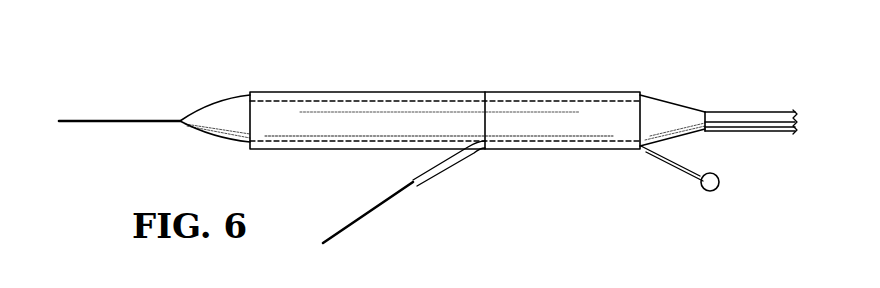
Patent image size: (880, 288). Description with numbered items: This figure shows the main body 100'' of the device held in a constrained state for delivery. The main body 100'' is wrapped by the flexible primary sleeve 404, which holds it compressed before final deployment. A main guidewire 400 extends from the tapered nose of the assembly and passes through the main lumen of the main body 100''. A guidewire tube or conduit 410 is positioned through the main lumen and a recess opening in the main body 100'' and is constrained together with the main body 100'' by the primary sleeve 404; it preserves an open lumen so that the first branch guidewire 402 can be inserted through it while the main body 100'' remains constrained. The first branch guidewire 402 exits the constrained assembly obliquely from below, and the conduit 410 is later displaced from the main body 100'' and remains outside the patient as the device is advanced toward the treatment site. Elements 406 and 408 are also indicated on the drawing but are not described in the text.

The shaft 400 is at (118, 120).
The device 100'' is at (238, 89).
The cable 402 is at (362, 212).
The housing 404 is at (385, 92).
The hand piece 406 is at (538, 75).
The tubing 408 is at (748, 114).
The connector 410 is at (673, 166).